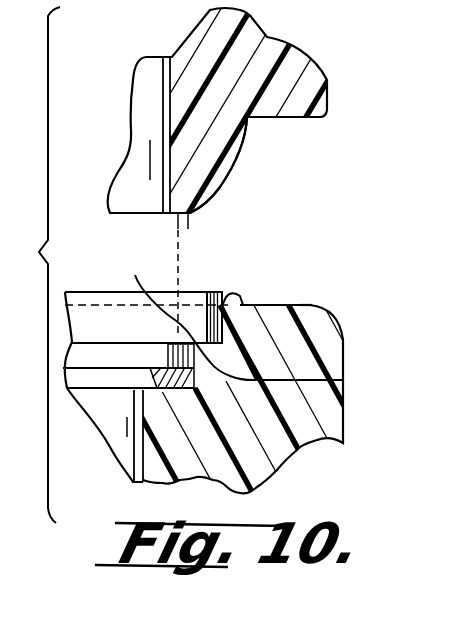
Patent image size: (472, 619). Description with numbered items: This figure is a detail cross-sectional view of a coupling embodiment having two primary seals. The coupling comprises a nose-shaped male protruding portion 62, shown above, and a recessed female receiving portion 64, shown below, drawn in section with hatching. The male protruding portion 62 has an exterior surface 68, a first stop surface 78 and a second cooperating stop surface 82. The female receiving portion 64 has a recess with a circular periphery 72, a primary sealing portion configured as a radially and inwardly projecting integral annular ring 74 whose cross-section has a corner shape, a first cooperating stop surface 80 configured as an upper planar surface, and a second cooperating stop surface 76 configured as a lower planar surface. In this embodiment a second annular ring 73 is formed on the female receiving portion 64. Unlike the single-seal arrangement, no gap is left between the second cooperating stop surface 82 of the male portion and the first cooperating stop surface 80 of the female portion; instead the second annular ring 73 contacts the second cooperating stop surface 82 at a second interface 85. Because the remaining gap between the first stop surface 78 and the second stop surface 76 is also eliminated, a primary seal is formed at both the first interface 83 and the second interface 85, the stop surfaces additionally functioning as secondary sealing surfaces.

The male protruding portion 62 is at (266, 131).
The female receiving portion 64 is at (298, 447).
The exterior surface 68 is at (233, 178).
The circular periphery 72 is at (193, 300).
The second annular ring 73 is at (240, 300).
The annular ring 74 is at (340, 380).
The second cooperating stop surface 76 is at (152, 387).
The first stop surface 78 is at (180, 220).
The first cooperating stop surface 80 is at (298, 303).
The second cooperating stop surface 82 is at (308, 120).
The first interface 83 is at (184, 314).
The second interface 85 is at (238, 300).